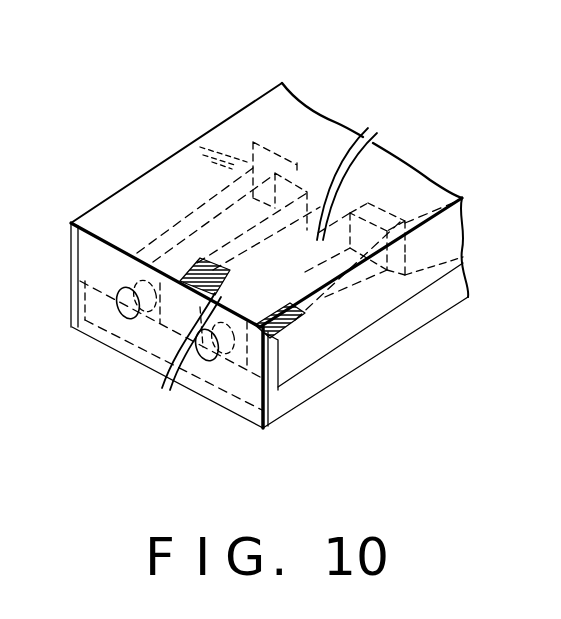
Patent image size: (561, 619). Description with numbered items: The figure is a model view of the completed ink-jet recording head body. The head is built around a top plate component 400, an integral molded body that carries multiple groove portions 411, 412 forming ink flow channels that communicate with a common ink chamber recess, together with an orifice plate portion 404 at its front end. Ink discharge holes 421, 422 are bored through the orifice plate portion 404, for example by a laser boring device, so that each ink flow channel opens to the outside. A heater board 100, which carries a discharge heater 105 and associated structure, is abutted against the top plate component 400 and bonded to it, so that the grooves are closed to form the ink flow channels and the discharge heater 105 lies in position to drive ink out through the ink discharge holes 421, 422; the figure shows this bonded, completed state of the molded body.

The heater board 100 is at (405, 337).
The discharge heater 105 is at (200, 256).
The top plate component 400 is at (147, 188).
The orifice plate portion 404 is at (272, 413).
The groove portion 411 is at (305, 228).
The groove portion 412 is at (367, 237).
The ink discharge hole 421 is at (126, 316).
The ink discharge hole 422 is at (200, 360).